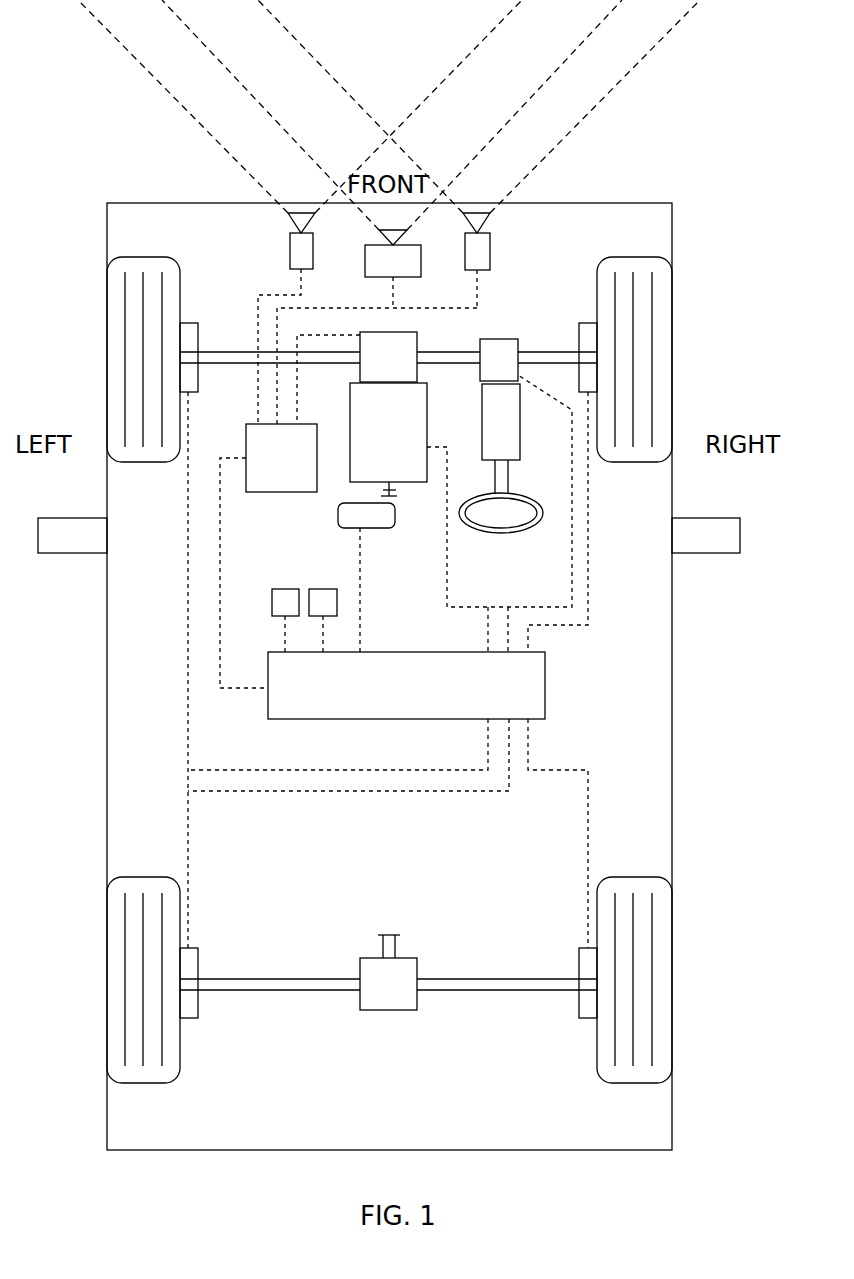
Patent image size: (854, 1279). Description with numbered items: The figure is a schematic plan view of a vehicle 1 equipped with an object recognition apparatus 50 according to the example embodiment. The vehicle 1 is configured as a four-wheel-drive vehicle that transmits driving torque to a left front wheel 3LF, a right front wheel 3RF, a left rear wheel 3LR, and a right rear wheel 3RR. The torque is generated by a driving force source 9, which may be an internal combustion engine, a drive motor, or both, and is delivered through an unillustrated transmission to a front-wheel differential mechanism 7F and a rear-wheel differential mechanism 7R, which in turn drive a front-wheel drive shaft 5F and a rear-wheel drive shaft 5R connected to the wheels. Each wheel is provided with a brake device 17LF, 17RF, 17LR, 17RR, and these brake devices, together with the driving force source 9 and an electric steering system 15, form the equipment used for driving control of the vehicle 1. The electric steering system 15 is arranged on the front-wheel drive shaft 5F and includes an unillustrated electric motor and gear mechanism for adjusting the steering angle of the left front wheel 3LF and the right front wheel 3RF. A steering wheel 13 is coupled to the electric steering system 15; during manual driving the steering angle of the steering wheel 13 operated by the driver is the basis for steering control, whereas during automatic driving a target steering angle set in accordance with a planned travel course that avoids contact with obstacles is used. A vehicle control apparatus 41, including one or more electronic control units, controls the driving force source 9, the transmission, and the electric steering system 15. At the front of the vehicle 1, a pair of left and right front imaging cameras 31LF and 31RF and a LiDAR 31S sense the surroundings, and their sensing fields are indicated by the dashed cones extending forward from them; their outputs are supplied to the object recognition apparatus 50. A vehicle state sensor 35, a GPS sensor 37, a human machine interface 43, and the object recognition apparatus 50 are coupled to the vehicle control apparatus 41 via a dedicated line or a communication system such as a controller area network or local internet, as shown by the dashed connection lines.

The vehicle 1 is at (678, 197).
The left front wheel 3LF is at (107, 323).
The right front wheel 3RF is at (672, 323).
The left rear wheel 3LR is at (107, 1000).
The right rear wheel 3RR is at (665, 1000).
The front-wheel drive shaft 5F is at (218, 366).
The rear-wheel drive shaft 5R is at (272, 992).
The front-wheel differential mechanism 7F is at (417, 337).
The rear-wheel differential mechanism 7R is at (385, 1012).
The driving force source 9 is at (427, 406).
The steering wheel 13 is at (519, 500).
The electric steering system 15 is at (500, 339).
The brake device 17LF is at (198, 335).
The brake device 17RF is at (579, 335).
The brake device 17LR is at (198, 1015).
The brake device 17RR is at (578, 1015).
The front imaging camera 31LF is at (290, 247).
The LiDAR 31S is at (366, 262).
The front imaging camera 31RF is at (490, 247).
The vehicle state sensor 35 is at (323, 589).
The GPS sensor 37 is at (285, 589).
The vehicle control apparatus 41 is at (545, 685).
The human machine interface 43 is at (385, 528).
The object recognition apparatus 50 is at (300, 424).